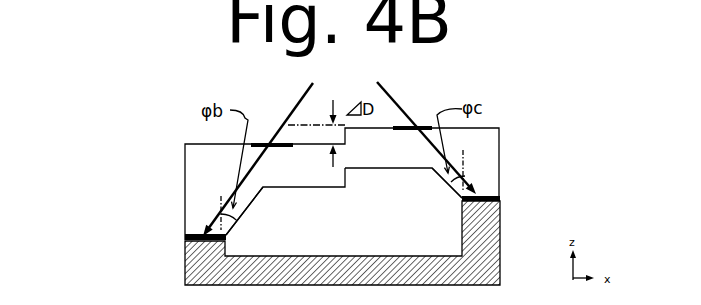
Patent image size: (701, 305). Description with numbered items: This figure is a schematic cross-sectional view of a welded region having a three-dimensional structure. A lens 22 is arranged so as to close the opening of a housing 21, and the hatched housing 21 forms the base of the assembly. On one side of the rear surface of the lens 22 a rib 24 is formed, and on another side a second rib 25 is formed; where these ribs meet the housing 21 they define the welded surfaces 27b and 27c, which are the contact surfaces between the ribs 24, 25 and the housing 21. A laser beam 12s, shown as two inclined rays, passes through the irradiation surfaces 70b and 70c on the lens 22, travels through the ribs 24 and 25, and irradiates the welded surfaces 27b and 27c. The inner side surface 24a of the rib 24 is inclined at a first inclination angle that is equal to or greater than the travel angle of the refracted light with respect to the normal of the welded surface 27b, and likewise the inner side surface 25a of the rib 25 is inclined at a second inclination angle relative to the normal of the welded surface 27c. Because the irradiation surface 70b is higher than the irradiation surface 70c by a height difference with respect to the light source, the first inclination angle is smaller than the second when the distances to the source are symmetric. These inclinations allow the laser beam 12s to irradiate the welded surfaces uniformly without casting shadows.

The laser beam 12s is at (322, 90).
The housing 21 is at (240, 275).
The lens 22 is at (195, 154).
The rib 24 is at (194, 202).
The inner side surface 24a is at (252, 213).
The rib 25 is at (485, 178).
The inner side surface 25a is at (435, 185).
The welded surface 27b is at (188, 232).
The welded surface 27c is at (493, 190).
The irradiation surface 70b is at (262, 131).
The irradiation surface 70c is at (422, 114).